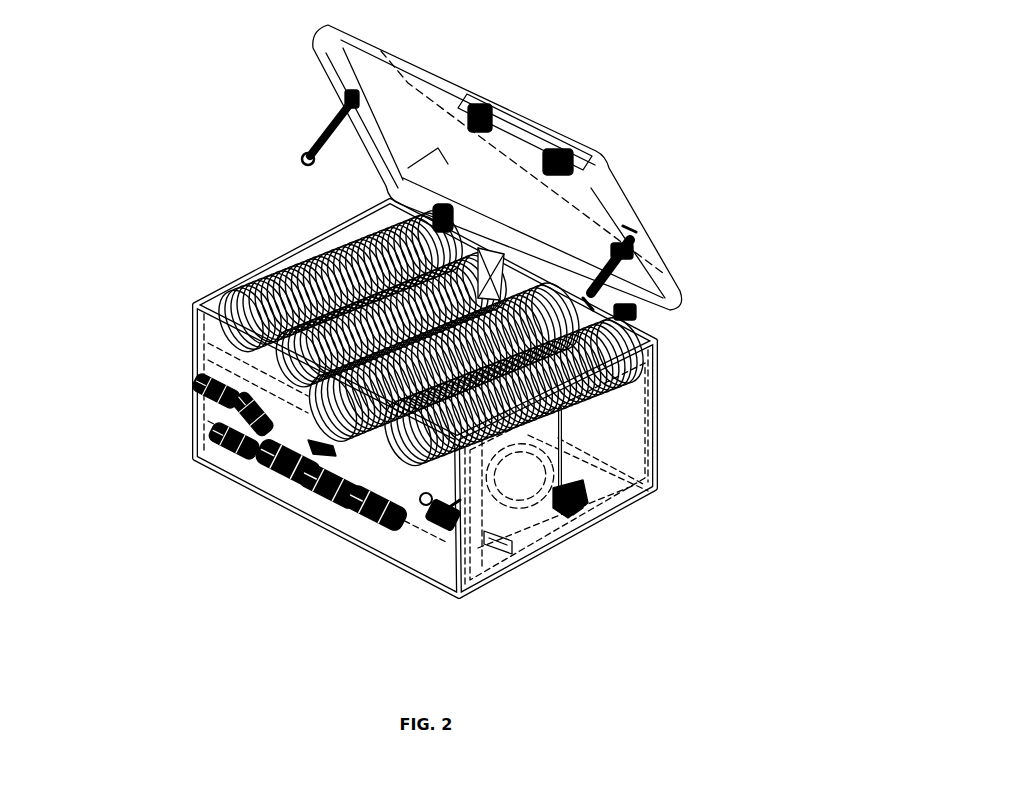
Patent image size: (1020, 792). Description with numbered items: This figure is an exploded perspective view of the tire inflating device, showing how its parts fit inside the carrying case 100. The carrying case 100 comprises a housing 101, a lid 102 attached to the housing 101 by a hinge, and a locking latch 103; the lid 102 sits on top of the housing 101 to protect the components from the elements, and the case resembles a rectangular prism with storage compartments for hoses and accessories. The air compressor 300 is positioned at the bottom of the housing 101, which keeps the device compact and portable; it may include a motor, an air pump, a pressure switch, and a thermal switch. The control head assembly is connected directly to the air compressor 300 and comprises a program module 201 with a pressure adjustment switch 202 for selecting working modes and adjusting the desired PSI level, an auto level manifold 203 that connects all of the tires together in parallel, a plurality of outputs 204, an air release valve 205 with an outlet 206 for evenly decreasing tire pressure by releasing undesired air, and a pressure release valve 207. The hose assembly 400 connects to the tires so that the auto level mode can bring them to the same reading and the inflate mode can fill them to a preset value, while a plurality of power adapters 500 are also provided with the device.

The carrying case 100 is at (190, 75).
The housing 101 is at (647, 427).
The lid 102 is at (533, 115).
The locking latch 103 is at (636, 236).
The program module 201 is at (310, 440).
The pressure adjustment switch 202 is at (222, 450).
The auto level manifold 203 is at (367, 502).
The outputs 204 is at (323, 525).
The air release valve 205 is at (420, 530).
The outlet 206 is at (472, 548).
The pressure release valve 207 is at (195, 372).
The air compressor 300 is at (518, 468).
The hose assembly 400 is at (300, 232).
The power adapters 500 is at (500, 272).